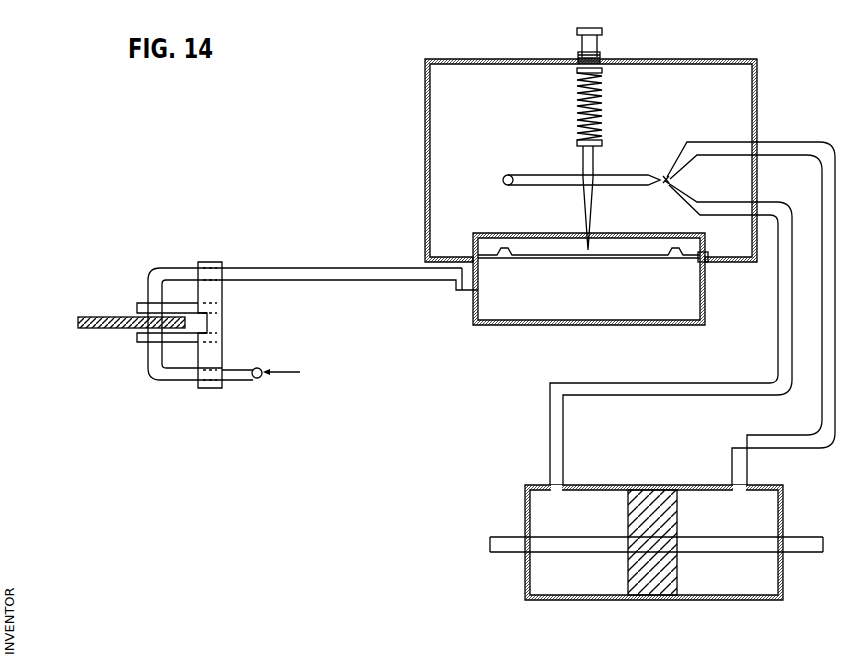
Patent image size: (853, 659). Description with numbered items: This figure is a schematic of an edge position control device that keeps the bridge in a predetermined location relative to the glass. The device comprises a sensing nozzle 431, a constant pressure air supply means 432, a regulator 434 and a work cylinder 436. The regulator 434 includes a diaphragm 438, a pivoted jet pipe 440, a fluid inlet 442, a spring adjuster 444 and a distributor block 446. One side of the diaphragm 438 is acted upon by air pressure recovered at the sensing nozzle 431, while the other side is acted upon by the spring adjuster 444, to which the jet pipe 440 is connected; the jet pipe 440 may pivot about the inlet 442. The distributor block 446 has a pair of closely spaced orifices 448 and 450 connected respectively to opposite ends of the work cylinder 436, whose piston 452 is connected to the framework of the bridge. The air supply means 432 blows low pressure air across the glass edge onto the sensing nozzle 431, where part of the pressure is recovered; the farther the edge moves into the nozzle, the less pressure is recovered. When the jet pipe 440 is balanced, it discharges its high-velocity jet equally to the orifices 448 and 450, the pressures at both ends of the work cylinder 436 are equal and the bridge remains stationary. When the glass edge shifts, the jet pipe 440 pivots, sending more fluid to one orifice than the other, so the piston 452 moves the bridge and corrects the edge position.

The sensing nozzle 431 is at (207, 262).
The constant pressure air supply means 432 is at (255, 367).
The regulator 434 is at (423, 138).
The work cylinder 436 is at (655, 604).
The diaphragm 438 is at (551, 260).
The pivoted jet pipe 440 is at (505, 174).
The fluid inlet 442 is at (508, 186).
The spring adjuster 444 is at (599, 150).
The distributor block 446 is at (670, 181).
The orifice 448 is at (663, 186).
The orifice 450 is at (666, 177).
The piston 452 is at (679, 518).